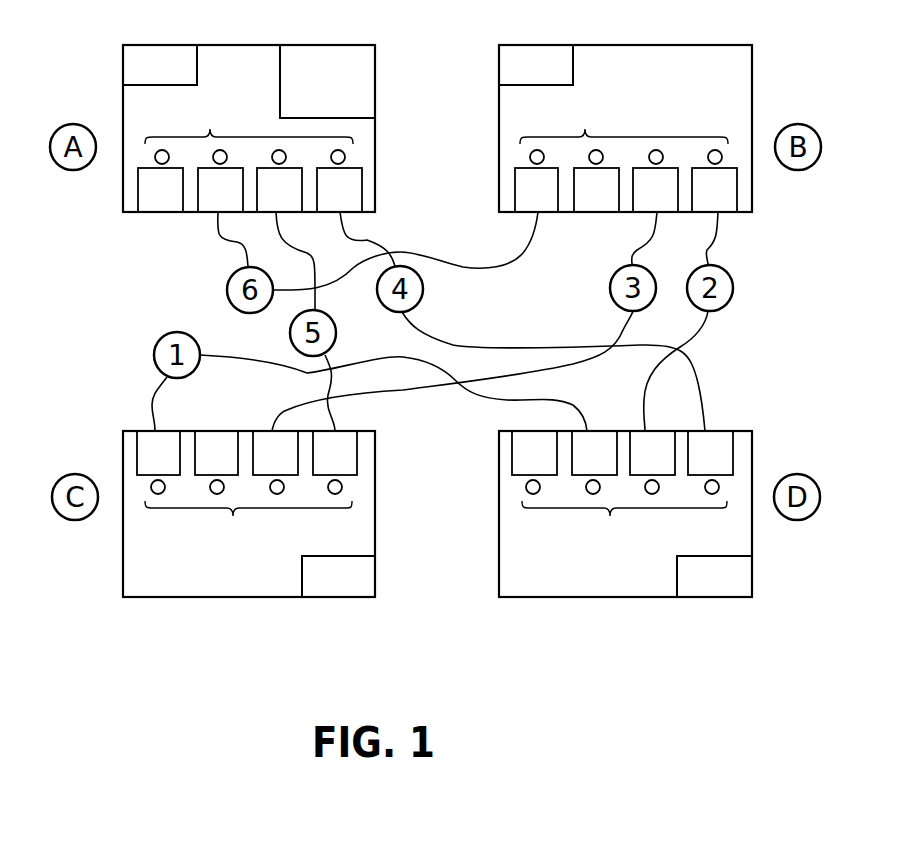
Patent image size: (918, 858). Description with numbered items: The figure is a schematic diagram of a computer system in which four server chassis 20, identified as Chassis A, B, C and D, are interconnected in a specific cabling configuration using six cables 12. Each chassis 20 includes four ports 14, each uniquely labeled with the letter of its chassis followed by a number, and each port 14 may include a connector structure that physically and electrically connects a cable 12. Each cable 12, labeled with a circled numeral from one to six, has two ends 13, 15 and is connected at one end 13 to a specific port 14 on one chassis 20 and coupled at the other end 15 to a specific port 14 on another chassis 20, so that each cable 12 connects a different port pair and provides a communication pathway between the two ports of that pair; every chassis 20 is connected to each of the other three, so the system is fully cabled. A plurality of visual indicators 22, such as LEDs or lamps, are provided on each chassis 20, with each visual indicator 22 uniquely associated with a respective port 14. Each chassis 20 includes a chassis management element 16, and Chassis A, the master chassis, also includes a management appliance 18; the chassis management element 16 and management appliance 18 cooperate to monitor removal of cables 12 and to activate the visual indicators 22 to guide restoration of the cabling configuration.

The cable 12 is at (517, 346).
The cable end 13 is at (625, 413).
The port 14 is at (228, 431).
The cable end 15 is at (737, 230).
The chassis management element 16 is at (123, 68).
The management appliance 18 is at (375, 85).
The server chassis 20 is at (318, 45).
The visual indicator 22 is at (437, 323).